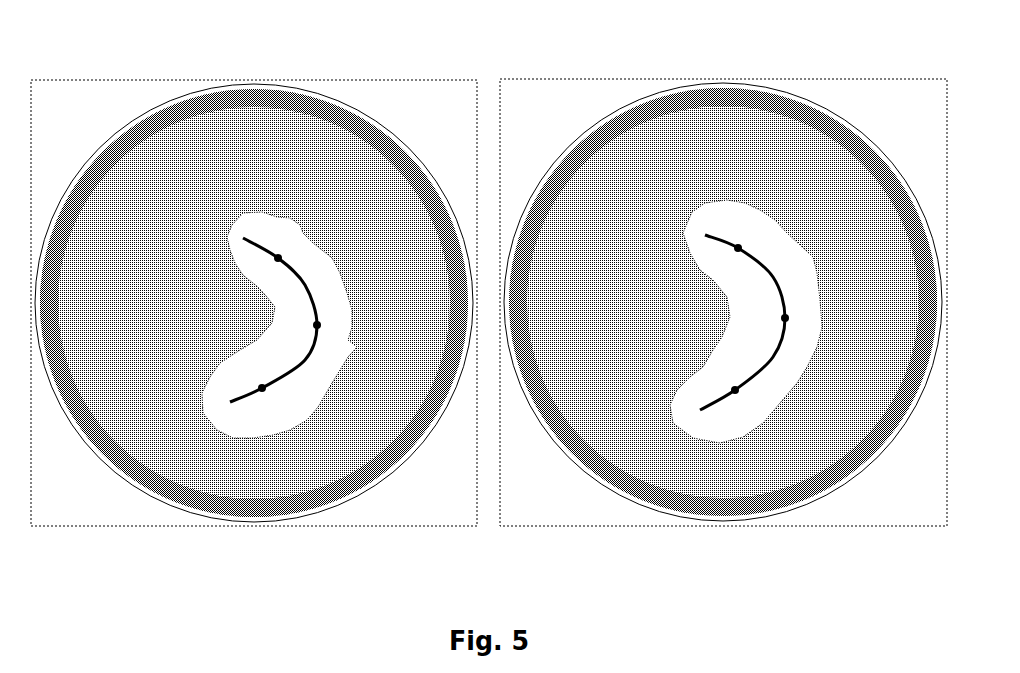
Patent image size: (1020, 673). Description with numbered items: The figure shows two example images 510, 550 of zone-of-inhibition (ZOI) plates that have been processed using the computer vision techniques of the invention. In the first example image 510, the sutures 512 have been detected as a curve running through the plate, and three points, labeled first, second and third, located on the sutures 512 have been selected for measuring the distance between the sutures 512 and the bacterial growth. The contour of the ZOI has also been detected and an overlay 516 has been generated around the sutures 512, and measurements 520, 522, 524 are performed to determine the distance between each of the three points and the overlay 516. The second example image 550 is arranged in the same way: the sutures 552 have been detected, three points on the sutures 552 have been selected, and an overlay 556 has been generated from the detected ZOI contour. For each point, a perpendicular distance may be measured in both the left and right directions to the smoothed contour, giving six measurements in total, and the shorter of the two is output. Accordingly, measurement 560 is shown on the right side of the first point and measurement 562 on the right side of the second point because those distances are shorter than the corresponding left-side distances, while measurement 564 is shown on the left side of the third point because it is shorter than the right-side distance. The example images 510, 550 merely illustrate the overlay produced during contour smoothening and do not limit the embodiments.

The example image 510 is at (254, 286).
The sutures 512 is at (305, 280).
The overlay 516 is at (232, 225).
The measurement 520 is at (275, 255).
The measurement 522 is at (347, 323).
The measurement 524 is at (264, 392).
The example image 550 is at (723, 286).
The sutures 552 is at (777, 280).
The overlay 556 is at (692, 212).
The measurement 560 is at (734, 246).
The measurement 562 is at (820, 313).
The measurement 564 is at (735, 390).